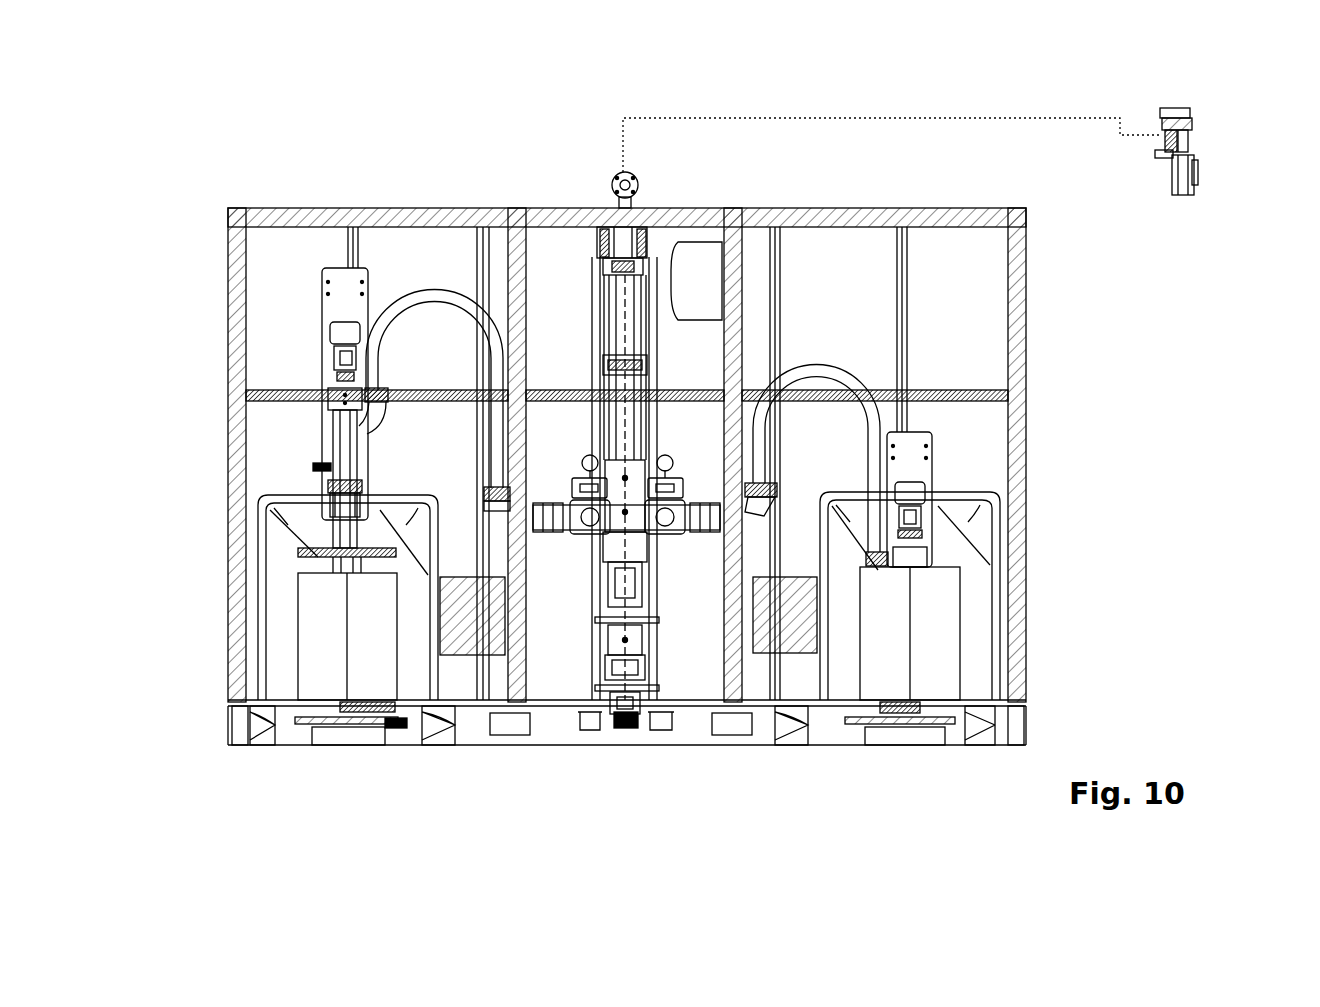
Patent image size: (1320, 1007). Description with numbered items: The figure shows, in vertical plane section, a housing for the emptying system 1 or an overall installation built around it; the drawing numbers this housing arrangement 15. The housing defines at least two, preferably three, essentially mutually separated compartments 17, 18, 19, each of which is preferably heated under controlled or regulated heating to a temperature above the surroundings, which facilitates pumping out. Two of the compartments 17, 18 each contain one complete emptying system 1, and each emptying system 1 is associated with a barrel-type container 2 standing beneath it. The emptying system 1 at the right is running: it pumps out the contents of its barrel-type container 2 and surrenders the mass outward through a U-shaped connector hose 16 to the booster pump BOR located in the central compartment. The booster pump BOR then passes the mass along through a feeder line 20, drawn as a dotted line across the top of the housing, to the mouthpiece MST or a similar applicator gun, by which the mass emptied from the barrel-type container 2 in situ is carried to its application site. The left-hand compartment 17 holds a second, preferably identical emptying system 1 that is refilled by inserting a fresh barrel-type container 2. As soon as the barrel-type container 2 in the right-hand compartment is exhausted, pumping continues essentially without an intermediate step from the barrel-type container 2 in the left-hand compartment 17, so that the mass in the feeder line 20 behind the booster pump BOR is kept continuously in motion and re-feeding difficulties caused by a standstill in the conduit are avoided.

The emptying system 1 is at (283, 603).
The barrel-type container 2 is at (320, 667).
The frame 15 is at (360, 178).
The U-shaped connector hose 16 is at (423, 297).
The compartment 17 is at (283, 467).
The compartment 18 is at (568, 255).
The compartment 19 is at (958, 366).
The feeder line 20 is at (640, 197).
The booster pump BOR is at (578, 560).
The mouthpiece MST is at (1190, 200).